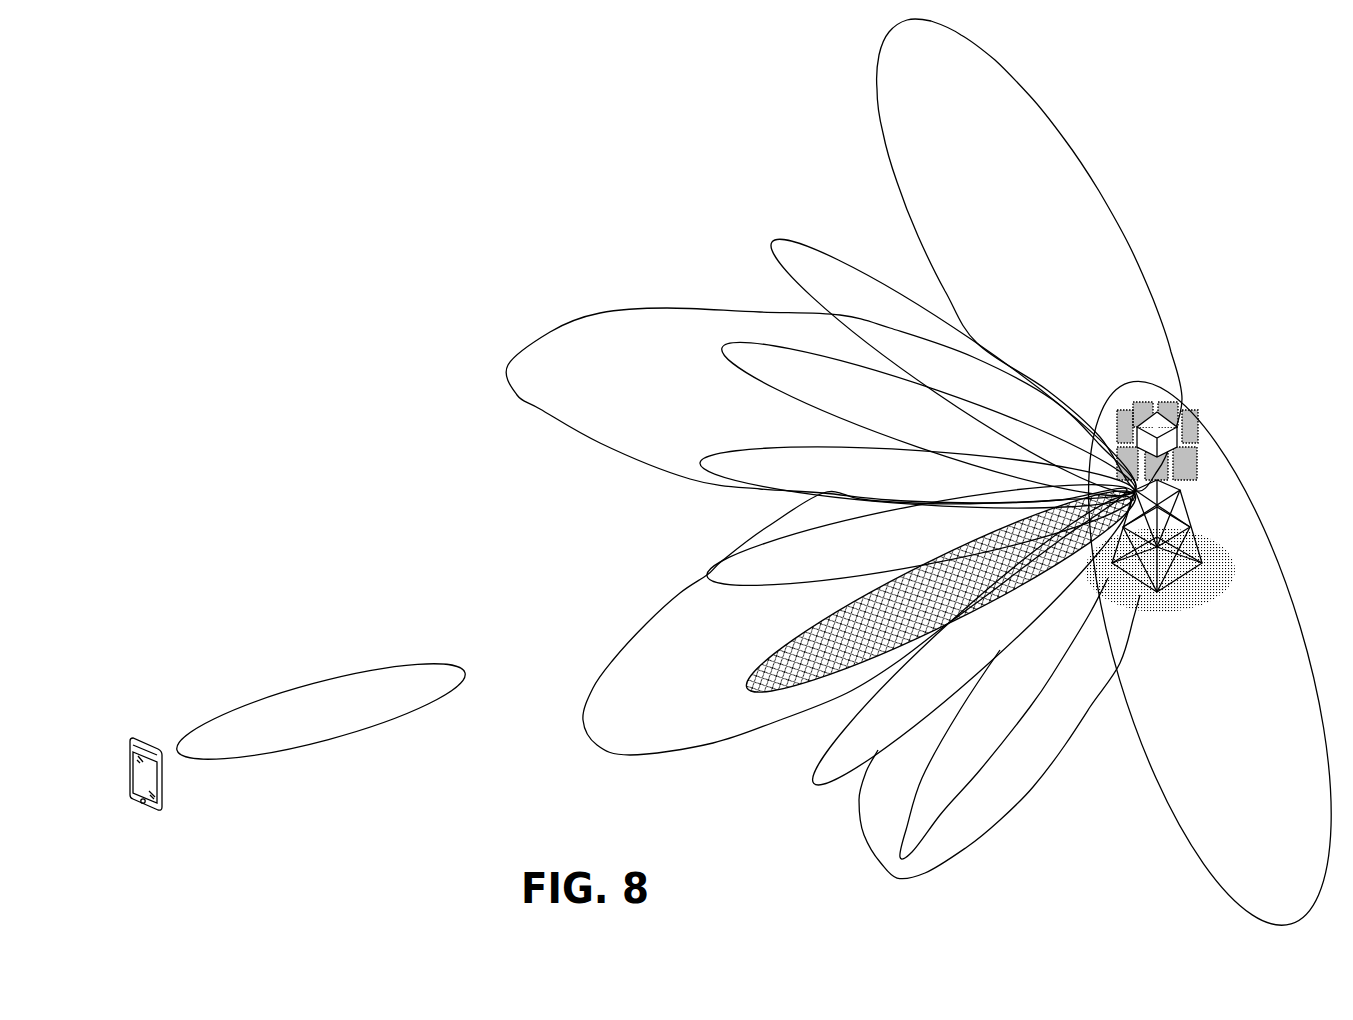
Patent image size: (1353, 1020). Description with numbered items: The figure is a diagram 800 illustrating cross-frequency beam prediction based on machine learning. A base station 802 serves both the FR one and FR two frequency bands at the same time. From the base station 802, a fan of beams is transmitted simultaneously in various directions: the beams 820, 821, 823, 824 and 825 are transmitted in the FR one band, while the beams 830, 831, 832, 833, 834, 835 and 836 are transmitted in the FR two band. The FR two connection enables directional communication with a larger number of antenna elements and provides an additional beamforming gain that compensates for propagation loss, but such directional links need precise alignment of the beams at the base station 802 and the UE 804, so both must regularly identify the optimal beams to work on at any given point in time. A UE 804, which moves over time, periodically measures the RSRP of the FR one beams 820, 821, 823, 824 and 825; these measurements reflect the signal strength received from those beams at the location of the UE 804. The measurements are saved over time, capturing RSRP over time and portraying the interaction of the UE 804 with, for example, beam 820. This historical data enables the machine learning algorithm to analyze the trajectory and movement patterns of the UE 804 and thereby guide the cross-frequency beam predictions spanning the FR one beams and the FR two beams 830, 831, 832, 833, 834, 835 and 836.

The wireless communication environment 800 is at (142, 88).
The base station 802 is at (1203, 425).
The UE 804 is at (132, 778).
The beam 820 is at (1029, 255).
The beam 821 is at (821, 405).
The beam 823 is at (855, 621).
The beam 824 is at (998, 737).
The beam 825 is at (1196, 653).
The beam 830 is at (953, 366).
The beam 831 is at (928, 419).
The beam 832 is at (917, 477).
The beam 833 is at (920, 535).
The beam 834 is at (941, 591).
The beam 835 is at (972, 641).
The beam 836 is at (1004, 718).